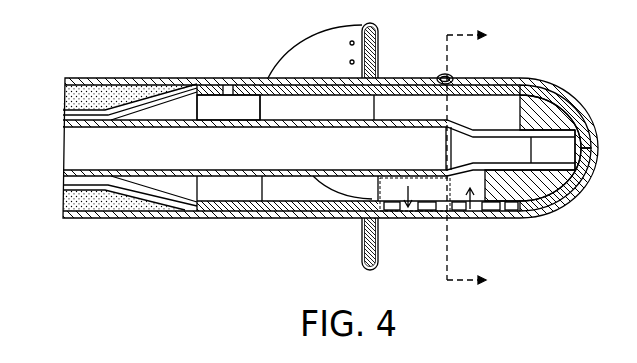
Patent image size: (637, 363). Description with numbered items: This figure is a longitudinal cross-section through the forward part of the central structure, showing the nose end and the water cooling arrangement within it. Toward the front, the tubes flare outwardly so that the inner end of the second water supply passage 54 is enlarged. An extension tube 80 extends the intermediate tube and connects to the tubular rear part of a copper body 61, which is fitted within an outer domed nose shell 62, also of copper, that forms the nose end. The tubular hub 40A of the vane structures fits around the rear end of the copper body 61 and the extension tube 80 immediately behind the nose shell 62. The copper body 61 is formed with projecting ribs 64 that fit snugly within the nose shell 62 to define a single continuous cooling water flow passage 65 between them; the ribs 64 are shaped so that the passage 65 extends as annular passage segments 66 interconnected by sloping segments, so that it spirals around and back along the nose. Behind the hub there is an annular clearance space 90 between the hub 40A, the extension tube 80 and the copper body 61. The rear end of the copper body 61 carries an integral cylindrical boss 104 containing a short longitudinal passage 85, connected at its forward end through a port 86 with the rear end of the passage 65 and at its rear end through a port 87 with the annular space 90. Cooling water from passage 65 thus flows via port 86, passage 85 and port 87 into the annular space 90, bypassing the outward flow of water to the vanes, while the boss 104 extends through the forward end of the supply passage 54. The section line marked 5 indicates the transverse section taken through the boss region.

The second water supply passage 54 is at (213, 110).
The extension tube 80 is at (268, 79).
The tubular hub 40A is at (298, 78).
The annular clearance space 90 is at (410, 82).
The annular passage segments 66 is at (505, 84).
The cooling water flow passage 65 is at (530, 82).
The copper body 61 is at (560, 94).
The nose shell 62 is at (583, 111).
The projecting ribs 64 is at (577, 186).
The port 86 is at (492, 222).
The short longitudinal passage 85 is at (471, 214).
The port 87 is at (493, 186).
The cylindrical boss 104 is at (378, 171).
The section line 5- 5 is at (476, 156).